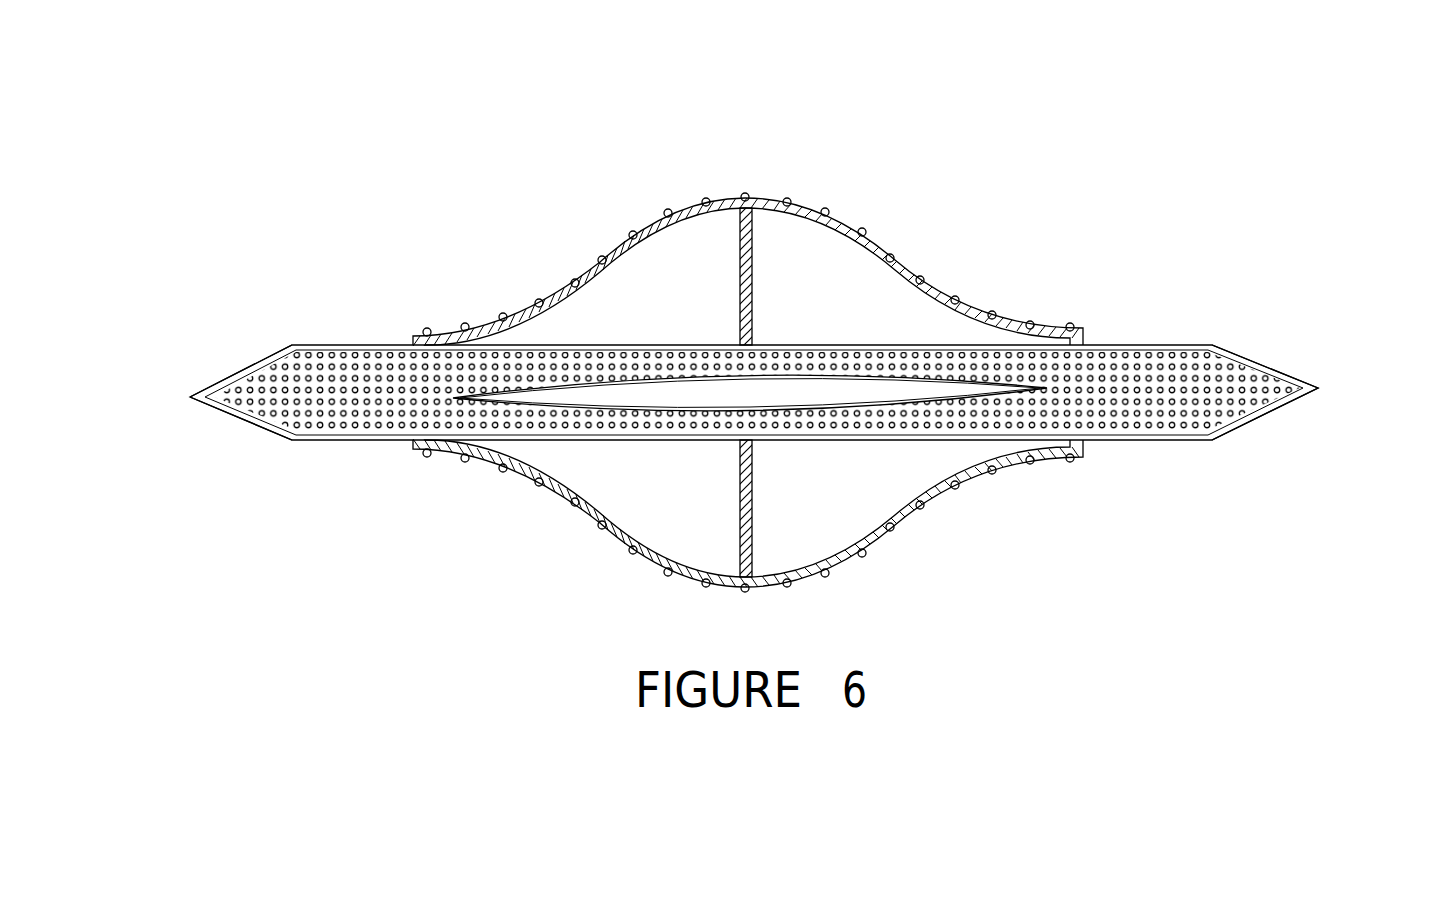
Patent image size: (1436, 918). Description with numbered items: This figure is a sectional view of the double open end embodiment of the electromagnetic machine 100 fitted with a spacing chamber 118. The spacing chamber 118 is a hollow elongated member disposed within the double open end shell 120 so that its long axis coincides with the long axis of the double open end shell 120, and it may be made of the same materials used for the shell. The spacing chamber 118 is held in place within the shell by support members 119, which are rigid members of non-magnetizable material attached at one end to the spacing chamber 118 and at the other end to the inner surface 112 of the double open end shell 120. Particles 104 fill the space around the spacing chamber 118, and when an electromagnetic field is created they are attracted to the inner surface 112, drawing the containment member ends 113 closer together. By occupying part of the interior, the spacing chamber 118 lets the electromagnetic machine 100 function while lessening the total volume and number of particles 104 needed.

The electromagnetic machine 100 is at (1076, 116).
The particles 104 is at (596, 372).
The inner surface 112 is at (605, 278).
The containment member ends 113 is at (188, 397).
The spacing chamber 118 is at (528, 374).
The support members 119 is at (753, 297).
The double open end shell 120 is at (762, 200).